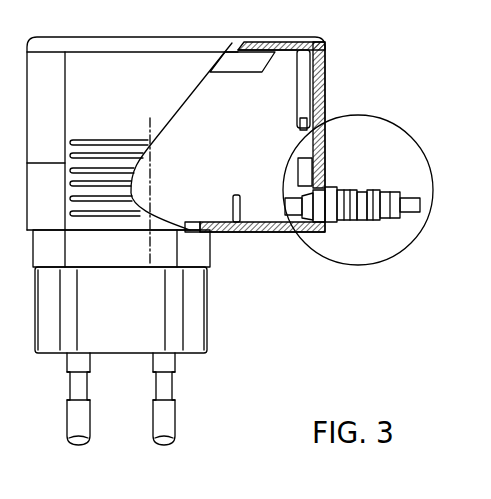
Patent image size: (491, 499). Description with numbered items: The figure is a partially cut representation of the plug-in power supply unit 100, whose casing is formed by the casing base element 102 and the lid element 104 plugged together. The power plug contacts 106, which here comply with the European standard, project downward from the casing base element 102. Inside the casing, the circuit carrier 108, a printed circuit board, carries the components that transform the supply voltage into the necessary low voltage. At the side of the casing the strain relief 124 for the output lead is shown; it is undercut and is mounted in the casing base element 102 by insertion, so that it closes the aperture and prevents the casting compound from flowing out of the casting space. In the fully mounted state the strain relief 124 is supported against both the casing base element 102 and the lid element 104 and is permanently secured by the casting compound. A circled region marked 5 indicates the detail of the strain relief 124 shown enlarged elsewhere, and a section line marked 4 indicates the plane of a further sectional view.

The power supply unit 100 is at (356, 51).
The lid element 104 is at (327, 89).
The circuit carrier 108 is at (249, 151).
The casing base element 102 is at (195, 312).
The power plug contacts 106 is at (165, 420).
The strain relief 124 is at (412, 214).
The detail view circle 5 is at (424, 130).
The section line 4 is at (125, 108).